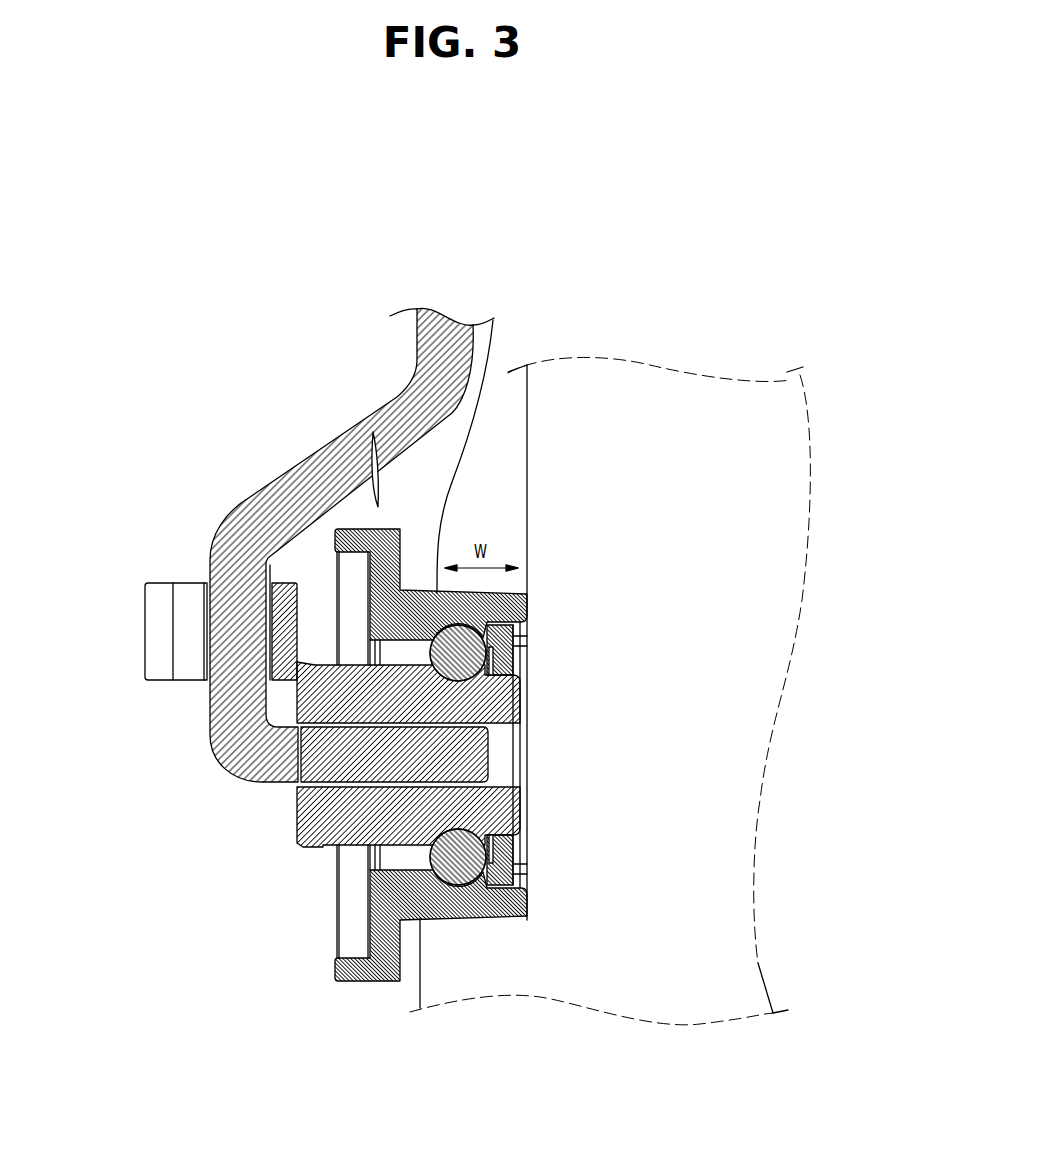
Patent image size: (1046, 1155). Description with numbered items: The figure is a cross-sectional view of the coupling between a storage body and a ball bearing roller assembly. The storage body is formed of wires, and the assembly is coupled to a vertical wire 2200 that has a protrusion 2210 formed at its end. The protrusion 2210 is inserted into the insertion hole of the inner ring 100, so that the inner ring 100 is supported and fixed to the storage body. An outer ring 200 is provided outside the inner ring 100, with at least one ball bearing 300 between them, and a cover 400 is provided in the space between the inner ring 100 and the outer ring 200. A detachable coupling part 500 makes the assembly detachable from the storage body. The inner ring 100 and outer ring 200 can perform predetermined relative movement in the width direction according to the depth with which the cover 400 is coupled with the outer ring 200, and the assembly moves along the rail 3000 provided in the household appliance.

The inner ring 100 is at (303, 847).
The outer ring 200 is at (418, 586).
The ball bearing 300 is at (496, 316).
The cover 400 is at (478, 877).
The detachable coupling part 500 is at (160, 578).
The vertical wire 2200 is at (238, 583).
The protrusion 2210 is at (318, 754).
The rail 3000 is at (666, 435).